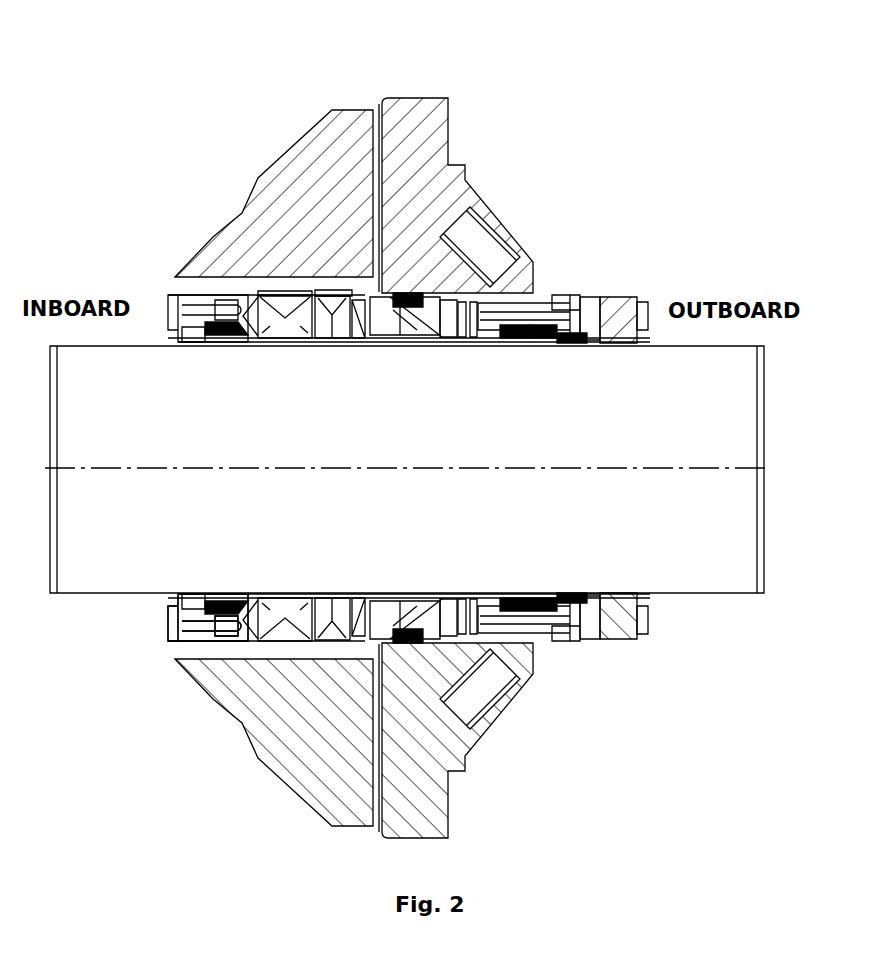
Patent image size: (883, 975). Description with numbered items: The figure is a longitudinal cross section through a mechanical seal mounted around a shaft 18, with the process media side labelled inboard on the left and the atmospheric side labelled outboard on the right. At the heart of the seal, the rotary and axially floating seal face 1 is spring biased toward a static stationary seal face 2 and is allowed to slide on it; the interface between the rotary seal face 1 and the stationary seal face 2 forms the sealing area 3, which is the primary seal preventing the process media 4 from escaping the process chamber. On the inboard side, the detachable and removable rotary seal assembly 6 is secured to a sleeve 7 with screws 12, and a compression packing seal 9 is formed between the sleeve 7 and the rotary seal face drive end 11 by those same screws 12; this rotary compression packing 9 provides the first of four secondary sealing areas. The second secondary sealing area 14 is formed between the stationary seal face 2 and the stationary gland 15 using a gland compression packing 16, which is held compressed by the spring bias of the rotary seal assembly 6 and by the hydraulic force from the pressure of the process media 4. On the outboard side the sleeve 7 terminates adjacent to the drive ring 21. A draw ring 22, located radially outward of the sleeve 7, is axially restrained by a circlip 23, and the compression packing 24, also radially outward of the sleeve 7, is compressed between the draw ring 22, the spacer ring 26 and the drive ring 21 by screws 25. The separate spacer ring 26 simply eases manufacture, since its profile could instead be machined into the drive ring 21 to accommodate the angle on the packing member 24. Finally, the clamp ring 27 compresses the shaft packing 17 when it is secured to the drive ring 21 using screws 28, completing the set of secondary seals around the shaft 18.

The rotary seal face 1 is at (352, 345).
The stationary seal face 2 is at (417, 345).
The sealing area 3 is at (380, 345).
The process media 4 is at (347, 288).
The rotary seal assembly 6 is at (287, 290).
The sleeve 7 is at (303, 343).
The compression packing seal 9 is at (223, 345).
The rotary seal face drive end 11 is at (253, 608).
The screws 12 is at (170, 305).
The second secondary sealing area 14 is at (382, 597).
The stationary gland 15 is at (417, 155).
The gland compression packing 16 is at (410, 633).
The shaft packing 17 is at (580, 600).
The shaft 18 is at (708, 415).
The drive ring 21 is at (570, 293).
The draw ring 22 is at (490, 345).
The circlip 23 is at (507, 345).
The compression packing 24 is at (538, 345).
The screws 25 is at (600, 297).
The spacer ring 26 is at (545, 602).
The clamp ring 27 is at (637, 600).
The screws 28 is at (647, 310).